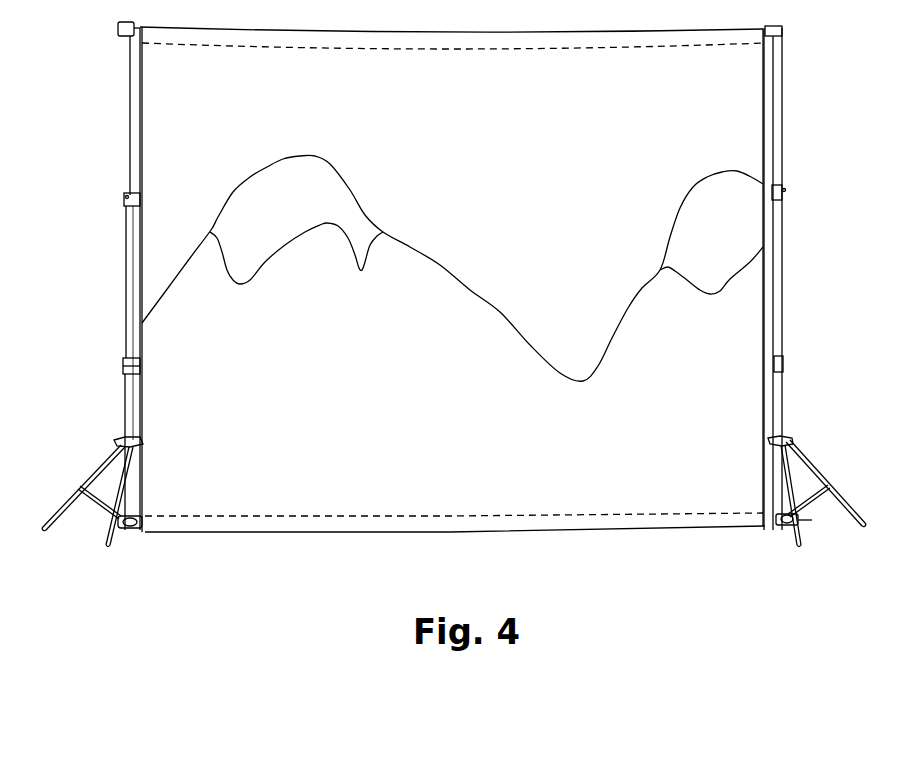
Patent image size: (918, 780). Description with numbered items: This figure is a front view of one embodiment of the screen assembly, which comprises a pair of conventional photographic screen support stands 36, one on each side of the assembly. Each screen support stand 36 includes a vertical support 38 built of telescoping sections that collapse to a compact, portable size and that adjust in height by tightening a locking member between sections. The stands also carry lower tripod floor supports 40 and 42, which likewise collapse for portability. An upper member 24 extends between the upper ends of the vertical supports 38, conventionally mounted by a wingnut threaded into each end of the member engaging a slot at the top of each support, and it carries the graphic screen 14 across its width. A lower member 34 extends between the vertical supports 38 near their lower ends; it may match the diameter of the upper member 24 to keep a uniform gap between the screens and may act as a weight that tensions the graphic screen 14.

The graphic screen 14 is at (273, 392).
The upper member 24 is at (117, 33).
The screen support stand 36 is at (130, 230).
The vertical support 38 is at (128, 348).
The lower tripod floor support 40 is at (79, 491).
The lower tripod floor support 42 is at (786, 462).
The lower member 34 is at (130, 530).